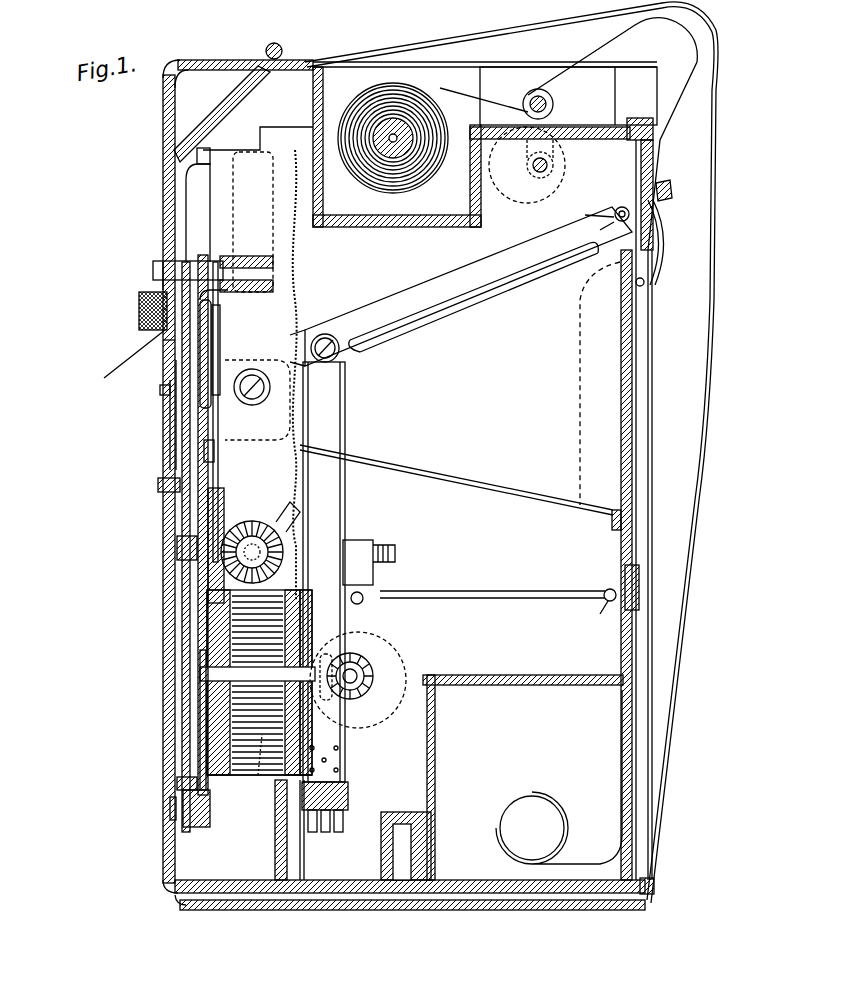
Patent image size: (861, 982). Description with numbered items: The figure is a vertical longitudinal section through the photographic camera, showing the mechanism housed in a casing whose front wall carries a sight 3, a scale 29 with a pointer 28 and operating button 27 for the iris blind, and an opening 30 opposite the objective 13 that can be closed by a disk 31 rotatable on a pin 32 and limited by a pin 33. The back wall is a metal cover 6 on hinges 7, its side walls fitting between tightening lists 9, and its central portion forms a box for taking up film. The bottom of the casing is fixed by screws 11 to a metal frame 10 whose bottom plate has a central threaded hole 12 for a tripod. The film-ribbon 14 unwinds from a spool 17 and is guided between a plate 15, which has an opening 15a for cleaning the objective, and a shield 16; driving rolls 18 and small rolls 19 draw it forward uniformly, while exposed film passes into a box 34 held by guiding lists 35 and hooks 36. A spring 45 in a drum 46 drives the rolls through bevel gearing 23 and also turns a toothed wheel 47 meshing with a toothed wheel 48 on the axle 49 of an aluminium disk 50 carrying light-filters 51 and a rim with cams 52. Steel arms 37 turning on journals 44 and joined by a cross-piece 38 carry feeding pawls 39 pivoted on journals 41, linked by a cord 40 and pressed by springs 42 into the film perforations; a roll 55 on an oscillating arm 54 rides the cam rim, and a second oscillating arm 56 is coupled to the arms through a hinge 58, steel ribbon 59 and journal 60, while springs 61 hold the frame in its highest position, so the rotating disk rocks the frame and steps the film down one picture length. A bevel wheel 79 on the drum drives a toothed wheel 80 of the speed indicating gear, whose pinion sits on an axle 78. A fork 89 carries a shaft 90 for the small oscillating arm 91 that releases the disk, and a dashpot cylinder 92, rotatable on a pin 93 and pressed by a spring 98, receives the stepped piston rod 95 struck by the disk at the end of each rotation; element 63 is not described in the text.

The sight 3 is at (208, 72).
The metal cover 6 is at (500, 32).
The hinges 7 is at (283, 48).
The tightening lists 9 is at (636, 92).
The metal frame 10 is at (298, 243).
The screws 11 is at (168, 890).
The central threaded hole 12 is at (400, 814).
The objective 13 is at (206, 460).
The film-ribbon 14 is at (652, 24).
The plate 15 is at (640, 578).
The opening 15a is at (630, 390).
The shield 16 is at (618, 568).
The spool 17 is at (420, 188).
The driving rolls 18 is at (514, 200).
The small rolls 19 is at (530, 94).
The bevel gearing 23 is at (244, 524).
The operating button 27 is at (139, 304).
The pointer 28 is at (165, 341).
The scale 29 is at (119, 361).
The opening 30 is at (170, 413).
The disk 31 is at (176, 436).
The pin 32 is at (158, 486).
The pin 33 is at (162, 390).
The box 34 is at (436, 752).
The guiding lists 35 is at (490, 676).
The hooks 36 is at (655, 886).
The arms 37 is at (480, 272).
The cross-piece 38 is at (672, 188).
The feeding pawls 39 is at (665, 251).
The rod or cord 40 is at (647, 284).
The journals 41 is at (618, 207).
The springs 42 is at (600, 216).
The pins or journals 44 is at (268, 394).
The spring 45 is at (263, 778).
The drum 46 is at (288, 606).
The toothed wheel 47 is at (212, 652).
The toothed wheel 48 is at (226, 494).
The axle 49 is at (177, 552).
The aluminium disk 50 is at (180, 614).
The light-filters 51 is at (196, 714).
The cams 52 is at (184, 364).
The oscillating arm 54 is at (202, 828).
The roll 55 is at (176, 825).
The oscillating arm 56 is at (344, 828).
The hinge 58 is at (349, 797).
The steel ribbon 59 is at (346, 432).
The journal 60 is at (340, 330).
The springs 61 is at (345, 355).
The bracket 63 is at (346, 656).
The axle 78 is at (372, 681).
The bevel wheel 79 is at (351, 603).
The toothed wheel 80 is at (398, 644).
The fork 89 is at (226, 312).
The shaft 90 is at (196, 262).
The oscillating arm 91 is at (165, 262).
The cylinder 92 is at (196, 202).
The pin 93 is at (197, 156).
The piston rod 95 is at (221, 348).
The spring 98 is at (220, 230).